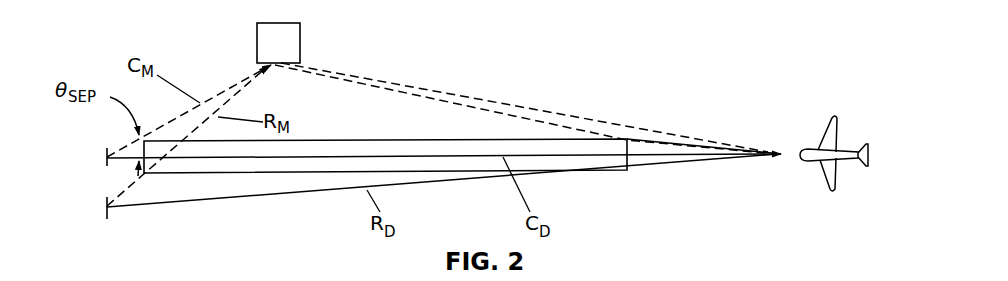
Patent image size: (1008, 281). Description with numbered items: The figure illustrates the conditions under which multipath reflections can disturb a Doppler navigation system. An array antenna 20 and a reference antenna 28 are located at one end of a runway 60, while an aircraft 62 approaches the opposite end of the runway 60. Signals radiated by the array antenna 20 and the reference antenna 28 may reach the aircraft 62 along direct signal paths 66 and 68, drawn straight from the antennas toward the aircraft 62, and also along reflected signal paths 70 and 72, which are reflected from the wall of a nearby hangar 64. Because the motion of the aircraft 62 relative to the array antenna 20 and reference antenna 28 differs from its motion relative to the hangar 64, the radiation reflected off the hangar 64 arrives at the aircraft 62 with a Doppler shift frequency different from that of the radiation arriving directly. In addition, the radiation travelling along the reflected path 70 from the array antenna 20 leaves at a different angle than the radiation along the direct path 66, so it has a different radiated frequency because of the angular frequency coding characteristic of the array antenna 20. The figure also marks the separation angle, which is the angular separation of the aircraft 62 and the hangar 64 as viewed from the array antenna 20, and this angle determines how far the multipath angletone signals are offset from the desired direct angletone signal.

The array antenna 20 is at (103, 153).
The reference antenna 28 is at (103, 205).
The runway 60 is at (622, 172).
The aircraft 62 is at (810, 163).
The hangar 64 is at (302, 38).
The direct signal path 66 is at (437, 157).
The direct signal path 68 is at (307, 193).
The reflected signal path 70 is at (247, 76).
The reflected signal path 72 is at (257, 84).